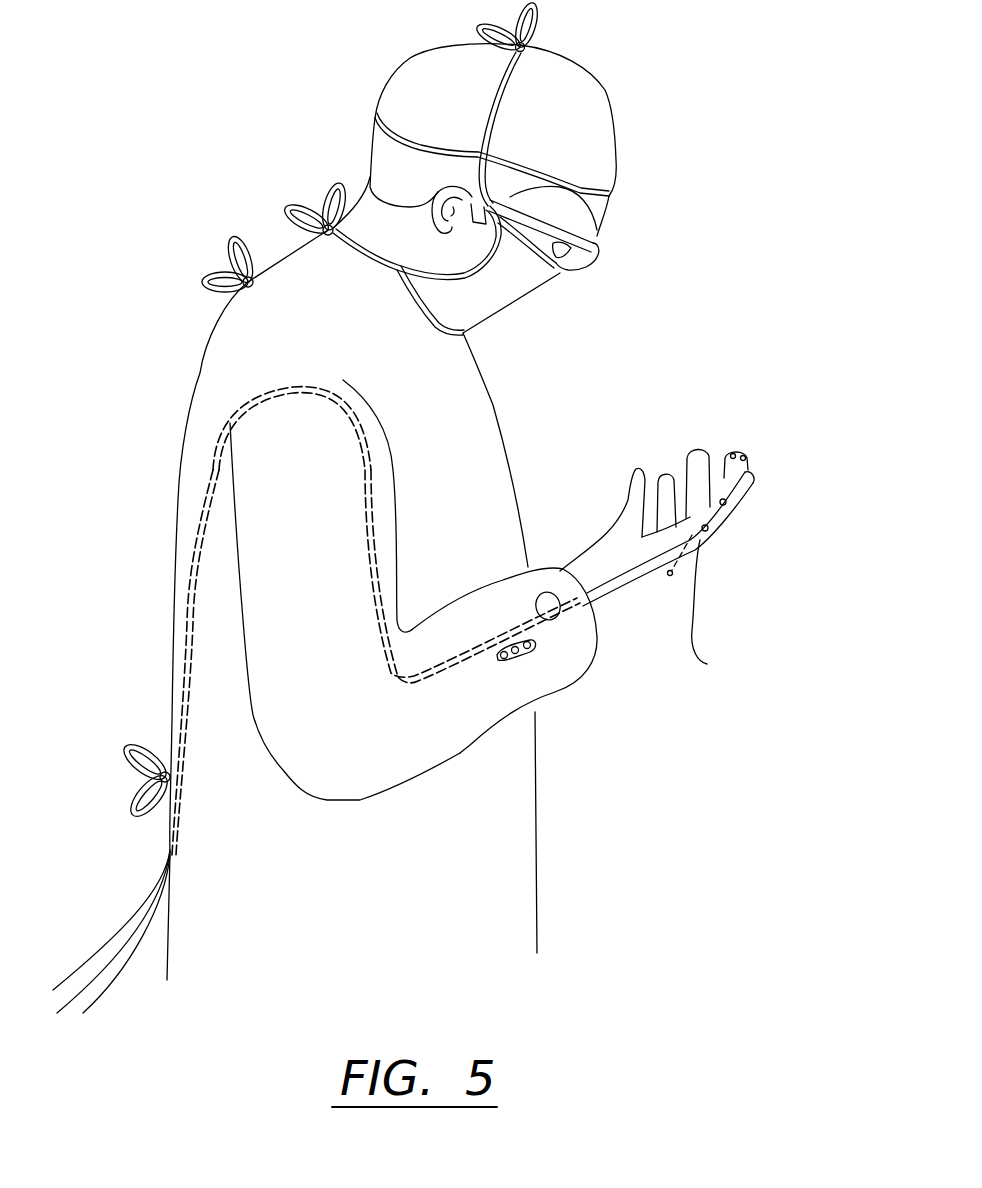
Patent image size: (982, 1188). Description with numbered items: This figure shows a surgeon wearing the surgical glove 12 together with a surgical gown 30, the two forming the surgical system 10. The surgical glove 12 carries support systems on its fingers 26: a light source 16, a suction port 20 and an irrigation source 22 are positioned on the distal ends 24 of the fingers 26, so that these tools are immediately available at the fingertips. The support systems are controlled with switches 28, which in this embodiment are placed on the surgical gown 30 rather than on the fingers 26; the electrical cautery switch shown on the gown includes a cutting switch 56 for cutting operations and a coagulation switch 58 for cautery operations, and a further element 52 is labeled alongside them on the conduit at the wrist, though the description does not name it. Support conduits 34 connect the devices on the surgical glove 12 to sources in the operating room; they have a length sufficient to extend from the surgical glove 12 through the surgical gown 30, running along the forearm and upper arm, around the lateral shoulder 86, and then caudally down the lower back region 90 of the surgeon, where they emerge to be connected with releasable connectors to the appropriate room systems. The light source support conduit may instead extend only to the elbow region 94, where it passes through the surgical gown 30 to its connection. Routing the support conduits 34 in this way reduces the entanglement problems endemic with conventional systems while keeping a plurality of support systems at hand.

The surgical system 10 is at (690, 353).
The surgical glove 12 is at (715, 609).
The light source 16 is at (747, 460).
The suction port 20 is at (728, 450).
The irrigation source 22 is at (665, 468).
The distal end 24 is at (702, 447).
The finger 26 is at (650, 468).
The switch 28 is at (523, 657).
The surgical gown 30 is at (492, 403).
The support conduit 34 is at (608, 585).
The ring 52 is at (709, 528).
The cutting switch 56 is at (727, 503).
The coagulation switch 58 is at (712, 541).
The lateral shoulder 86 is at (188, 335).
The lower back region 90 is at (133, 977).
The elbow region 94 is at (346, 768).